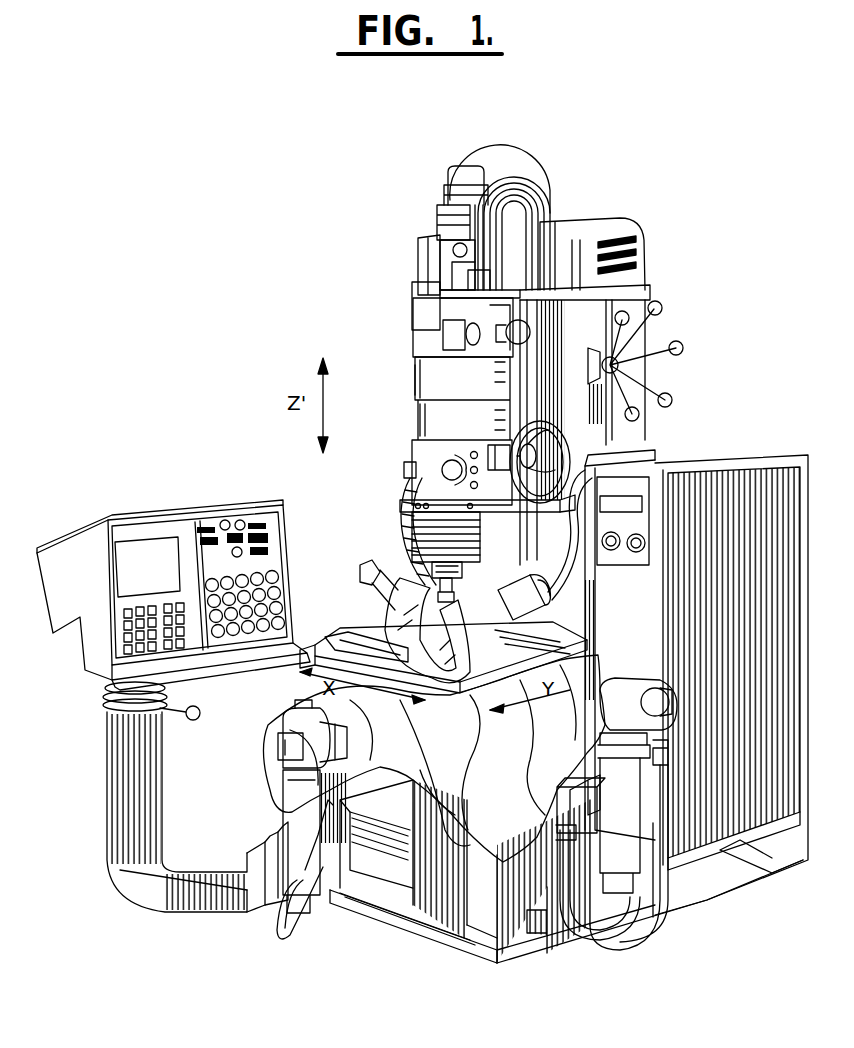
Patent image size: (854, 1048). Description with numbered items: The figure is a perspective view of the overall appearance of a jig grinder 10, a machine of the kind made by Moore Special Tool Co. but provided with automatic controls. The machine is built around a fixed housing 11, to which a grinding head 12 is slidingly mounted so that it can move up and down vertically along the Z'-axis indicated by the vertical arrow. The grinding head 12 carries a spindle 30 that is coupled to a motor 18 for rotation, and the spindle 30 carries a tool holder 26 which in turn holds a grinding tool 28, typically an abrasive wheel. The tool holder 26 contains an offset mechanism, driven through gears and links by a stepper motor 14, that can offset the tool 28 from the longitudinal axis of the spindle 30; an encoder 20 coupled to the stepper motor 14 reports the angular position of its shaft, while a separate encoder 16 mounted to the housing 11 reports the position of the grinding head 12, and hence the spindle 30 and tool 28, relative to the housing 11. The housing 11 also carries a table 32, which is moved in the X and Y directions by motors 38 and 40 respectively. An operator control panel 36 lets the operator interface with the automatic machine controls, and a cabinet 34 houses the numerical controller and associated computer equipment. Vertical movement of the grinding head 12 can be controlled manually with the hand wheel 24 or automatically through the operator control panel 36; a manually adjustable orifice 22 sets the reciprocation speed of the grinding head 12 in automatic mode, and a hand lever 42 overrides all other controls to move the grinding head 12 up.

The jig grinder 10 is at (688, 196).
The fixed housing 11 is at (630, 464).
The grinding head 12 is at (450, 452).
The stepper motor 14 is at (424, 272).
The encoder 16 is at (418, 304).
The motor 18 is at (458, 172).
The encoder 20 is at (418, 242).
The manually adjustable orifice 22 is at (522, 330).
The hand wheel 24 is at (547, 426).
The tool holder 26 is at (440, 590).
The grinding tool 28 is at (457, 610).
The spindle 30 is at (440, 588).
The table 32 is at (490, 702).
The cabinet 34 is at (759, 458).
The operator control panel 36 is at (234, 518).
The motor 38 is at (282, 746).
The motor 40 is at (667, 685).
The hand lever 42 is at (415, 472).